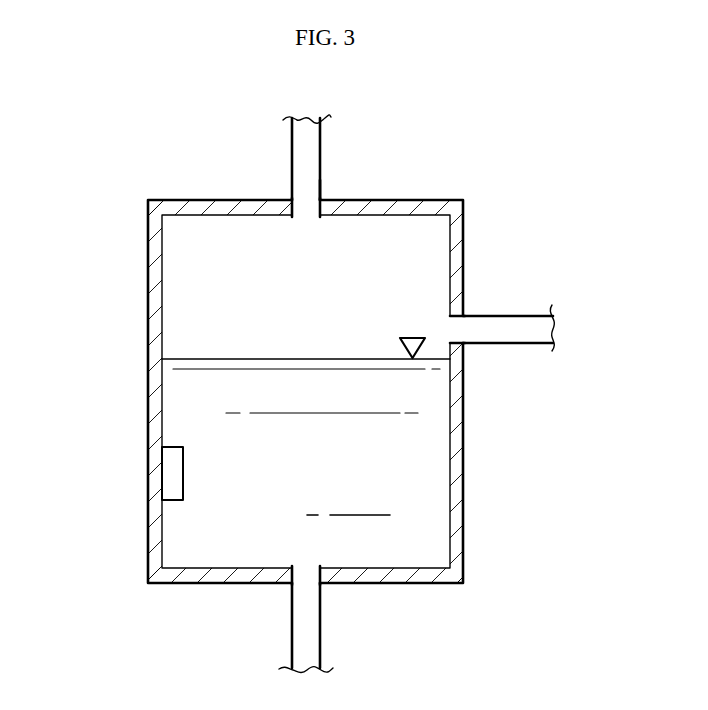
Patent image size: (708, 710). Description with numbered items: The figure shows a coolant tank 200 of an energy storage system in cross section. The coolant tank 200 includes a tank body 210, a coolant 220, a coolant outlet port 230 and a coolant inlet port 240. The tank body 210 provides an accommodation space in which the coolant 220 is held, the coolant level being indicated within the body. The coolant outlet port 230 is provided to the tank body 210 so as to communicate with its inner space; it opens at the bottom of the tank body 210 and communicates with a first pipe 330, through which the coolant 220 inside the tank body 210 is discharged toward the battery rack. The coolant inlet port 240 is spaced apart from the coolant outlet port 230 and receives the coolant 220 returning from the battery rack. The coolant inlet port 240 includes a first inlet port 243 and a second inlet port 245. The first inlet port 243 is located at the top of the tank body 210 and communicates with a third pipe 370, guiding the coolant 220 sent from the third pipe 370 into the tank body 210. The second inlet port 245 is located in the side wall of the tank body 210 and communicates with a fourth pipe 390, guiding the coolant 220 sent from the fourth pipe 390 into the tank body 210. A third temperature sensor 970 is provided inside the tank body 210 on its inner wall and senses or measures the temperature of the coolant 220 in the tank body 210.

The coolant tank 200 is at (325, 377).
The tank body 210 is at (152, 527).
The coolant 220 is at (190, 402).
The coolant outlet port 230 is at (320, 579).
The coolant inlet port 240 is at (290, 204).
The first inlet port 243 is at (320, 184).
The second inlet port 245 is at (454, 316).
The first pipe 330 is at (320, 628).
The third pipe 370 is at (320, 148).
The fourth pipe 390 is at (530, 315).
The third temperature sensor 970 is at (172, 470).